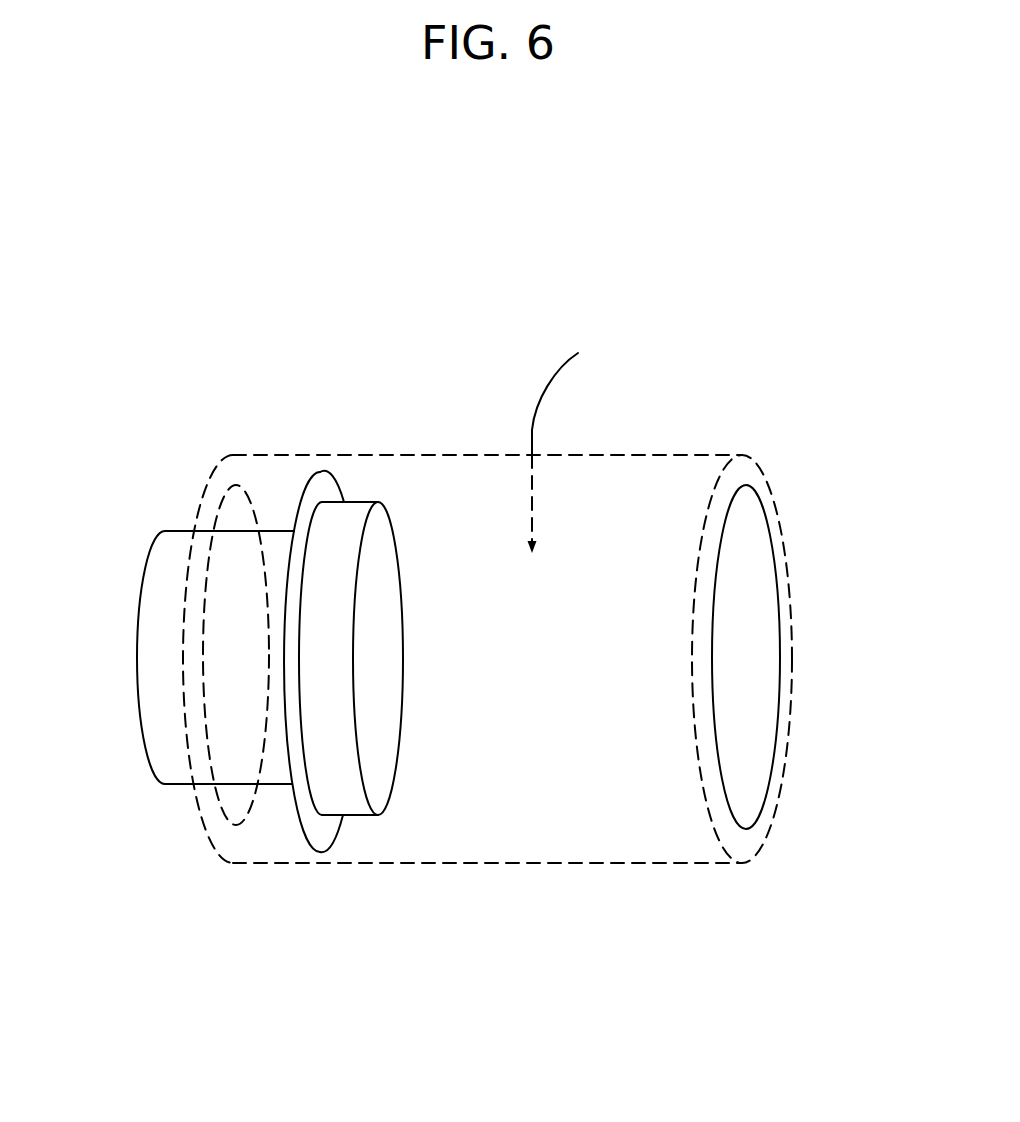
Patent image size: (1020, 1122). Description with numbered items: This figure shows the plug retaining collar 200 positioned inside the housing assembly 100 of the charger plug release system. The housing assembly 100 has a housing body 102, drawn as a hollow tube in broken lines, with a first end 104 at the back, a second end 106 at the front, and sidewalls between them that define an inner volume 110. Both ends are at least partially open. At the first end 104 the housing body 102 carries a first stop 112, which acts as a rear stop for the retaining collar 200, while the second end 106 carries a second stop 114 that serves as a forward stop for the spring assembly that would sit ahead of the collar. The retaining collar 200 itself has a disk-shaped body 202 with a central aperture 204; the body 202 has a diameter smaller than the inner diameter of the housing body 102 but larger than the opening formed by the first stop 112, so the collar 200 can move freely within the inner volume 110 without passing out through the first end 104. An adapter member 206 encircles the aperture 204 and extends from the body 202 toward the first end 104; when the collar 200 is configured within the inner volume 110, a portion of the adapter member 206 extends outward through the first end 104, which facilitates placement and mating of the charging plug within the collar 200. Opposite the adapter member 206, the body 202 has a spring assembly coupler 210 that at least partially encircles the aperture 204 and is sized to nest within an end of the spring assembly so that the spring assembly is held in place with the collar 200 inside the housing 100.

The housing assembly 100 is at (692, 366).
The housing body 102 is at (461, 454).
The first end 104 is at (203, 490).
The second end 106 is at (790, 558).
The inner volume 110 is at (579, 440).
The first stop 112 is at (215, 800).
The second stop 114 is at (778, 622).
The plug retaining collar 200 is at (376, 633).
The body 202 is at (300, 492).
The central aperture 204 is at (385, 653).
The adapter member 206 is at (140, 603).
The spring assembly coupler 210 is at (352, 802).